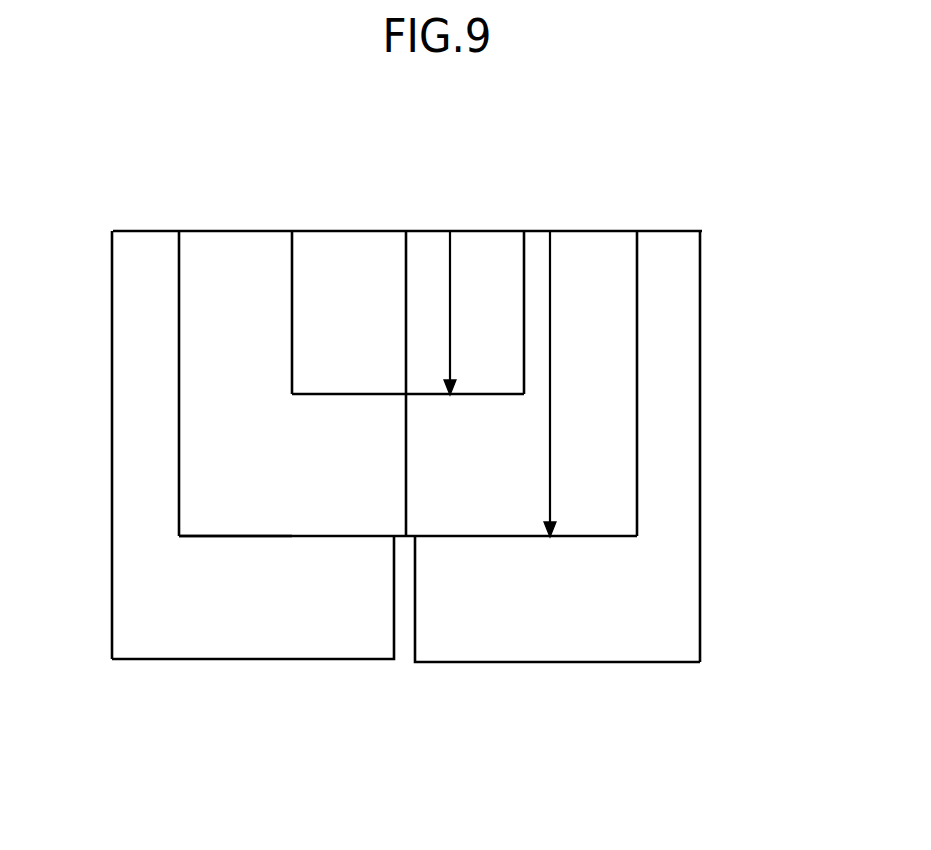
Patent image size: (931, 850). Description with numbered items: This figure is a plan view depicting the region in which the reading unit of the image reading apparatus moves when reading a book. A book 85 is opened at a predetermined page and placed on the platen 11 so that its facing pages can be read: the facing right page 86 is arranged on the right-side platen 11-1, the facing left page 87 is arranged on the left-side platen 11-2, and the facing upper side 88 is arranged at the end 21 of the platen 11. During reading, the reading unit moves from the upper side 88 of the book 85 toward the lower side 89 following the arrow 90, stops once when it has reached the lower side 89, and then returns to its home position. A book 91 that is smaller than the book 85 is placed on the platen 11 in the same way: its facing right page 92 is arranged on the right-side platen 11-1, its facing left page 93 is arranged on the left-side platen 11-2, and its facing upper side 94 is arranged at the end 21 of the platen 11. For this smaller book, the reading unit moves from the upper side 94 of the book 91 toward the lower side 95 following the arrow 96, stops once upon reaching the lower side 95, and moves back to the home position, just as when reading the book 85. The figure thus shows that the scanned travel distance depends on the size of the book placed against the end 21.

The platen 11 is at (700, 146).
The right-side platen 11-1 is at (140, 659).
The left-side platen 11-2 is at (668, 662).
The end of the platen 21 is at (672, 231).
The book 85 is at (637, 425).
The facing right page 86 is at (210, 459).
The facing left page 87 is at (595, 461).
The facing upper side 88 is at (226, 231).
The lower side 89 is at (237, 536).
The arrow 90 is at (551, 393).
The book 91 is at (524, 358).
The facing right page 92 is at (353, 316).
The facing left page 93 is at (488, 316).
The facing upper side 94 is at (352, 231).
The lower side 95 is at (337, 394).
The arrow 96 is at (451, 270).